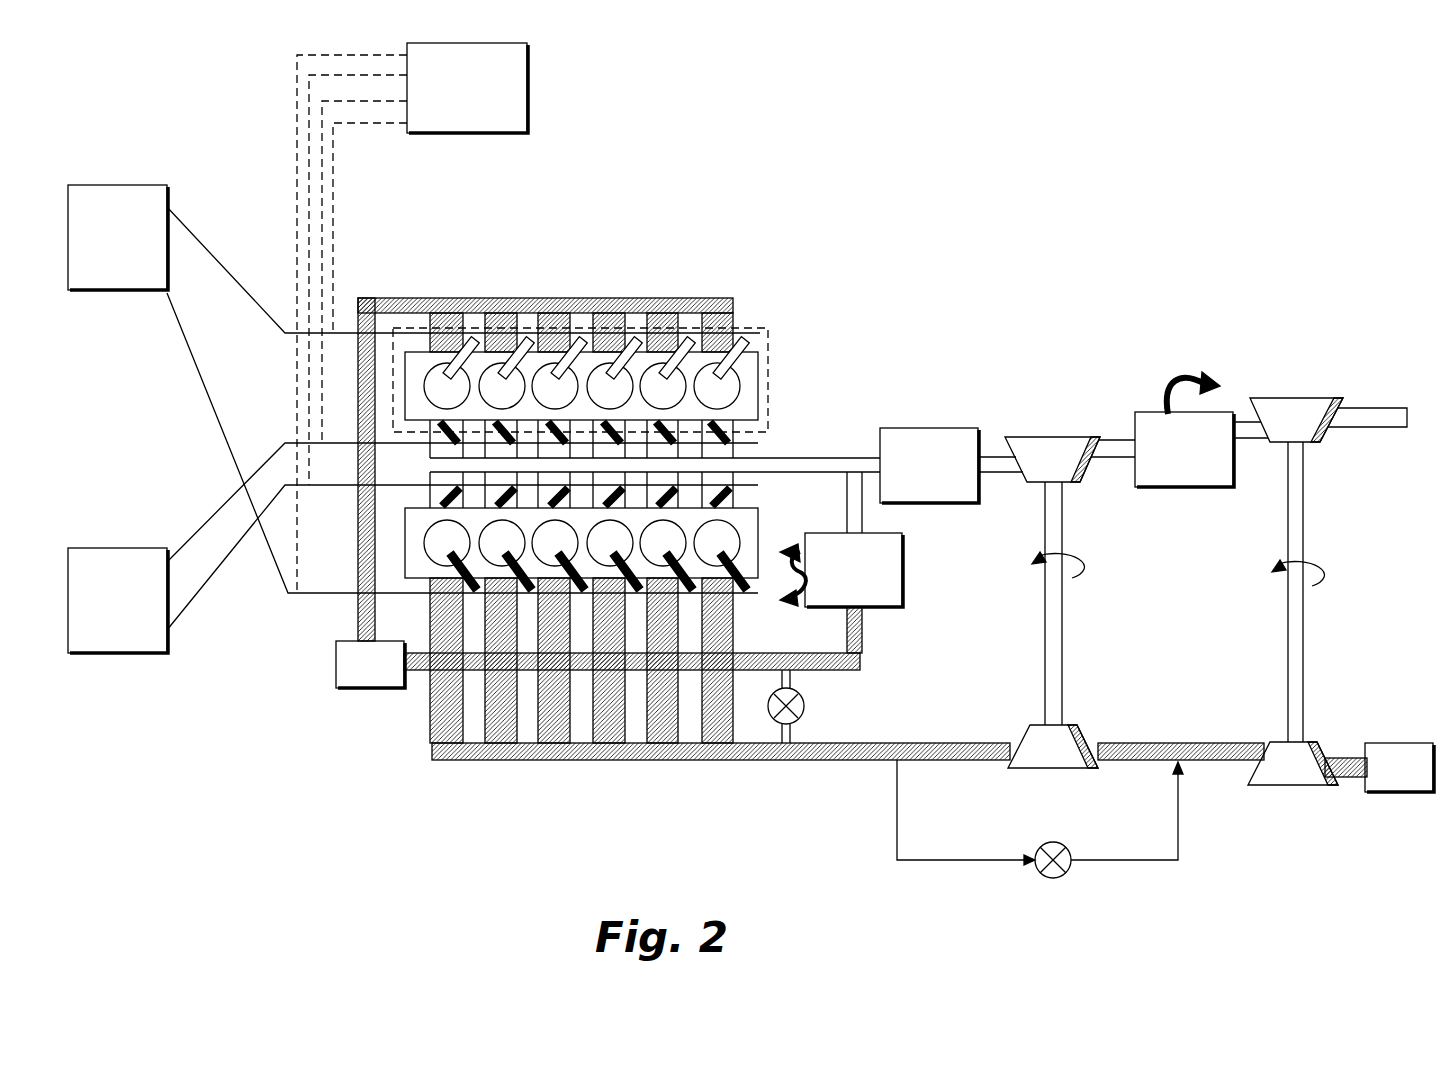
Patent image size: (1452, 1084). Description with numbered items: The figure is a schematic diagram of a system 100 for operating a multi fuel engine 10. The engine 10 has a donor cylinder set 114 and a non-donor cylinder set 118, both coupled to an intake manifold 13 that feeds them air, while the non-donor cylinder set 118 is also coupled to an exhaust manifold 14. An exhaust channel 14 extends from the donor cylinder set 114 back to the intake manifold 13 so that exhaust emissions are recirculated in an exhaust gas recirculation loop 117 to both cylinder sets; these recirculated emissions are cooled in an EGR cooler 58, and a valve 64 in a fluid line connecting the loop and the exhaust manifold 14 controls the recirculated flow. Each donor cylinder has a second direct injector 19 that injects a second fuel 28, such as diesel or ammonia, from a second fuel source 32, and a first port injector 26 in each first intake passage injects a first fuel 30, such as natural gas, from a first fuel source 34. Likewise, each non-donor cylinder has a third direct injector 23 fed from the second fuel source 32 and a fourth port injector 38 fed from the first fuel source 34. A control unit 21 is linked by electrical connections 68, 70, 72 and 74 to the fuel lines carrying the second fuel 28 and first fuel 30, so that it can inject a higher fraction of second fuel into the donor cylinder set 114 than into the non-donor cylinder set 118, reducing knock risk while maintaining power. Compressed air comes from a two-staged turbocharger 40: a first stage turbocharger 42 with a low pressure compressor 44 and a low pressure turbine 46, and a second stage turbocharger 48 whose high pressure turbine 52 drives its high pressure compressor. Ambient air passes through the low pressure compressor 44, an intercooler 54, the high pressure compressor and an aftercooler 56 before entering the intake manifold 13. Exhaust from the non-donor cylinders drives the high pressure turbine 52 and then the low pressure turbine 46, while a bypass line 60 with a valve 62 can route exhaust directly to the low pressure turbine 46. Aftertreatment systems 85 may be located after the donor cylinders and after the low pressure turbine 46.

The engine 10 is at (622, 506).
The intake manifold 13 is at (838, 457).
The exhaust manifold 14 is at (487, 298).
The second direct injector 19 is at (752, 588).
The control unit 21 is at (528, 76).
The third direct injector 23 is at (758, 372).
The first port injector 26 is at (760, 440).
The second fuel 28 is at (214, 258).
The first fuel 30 is at (228, 500).
The second fuel source 32 is at (167, 185).
The first fuel source 34 is at (150, 548).
The fourth port injector 38 is at (745, 498).
The two-staged turbocharger 40 is at (1345, 565).
The first stage turbocharger 42 is at (1343, 392).
The low pressure compressor 44 is at (1322, 445).
The low pressure turbine 46 is at (1270, 745).
The second stage turbocharger 48 is at (1100, 428).
The high pressure turbine 52 is at (1030, 728).
The intercooler 54 is at (1137, 412).
The aftercooler 56 is at (950, 428).
The EGR cooler 58 is at (902, 555).
The high pressure turbine bypass line 60 is at (897, 812).
The valve 62 is at (1047, 878).
The valve 64 is at (804, 706).
The electrical connection 68 is at (322, 210).
The electrical connection 70 is at (333, 178).
The electrical connection 72 is at (309, 160).
The electrical connection 74 is at (297, 127).
The aftertreatment system 85 is at (336, 665).
The system 100 is at (1252, 235).
The donor cylinder set 114 is at (768, 328).
The exhaust gas recirculation loop 117 is at (318, 703).
The non-donor cylinder set 118 is at (758, 518).